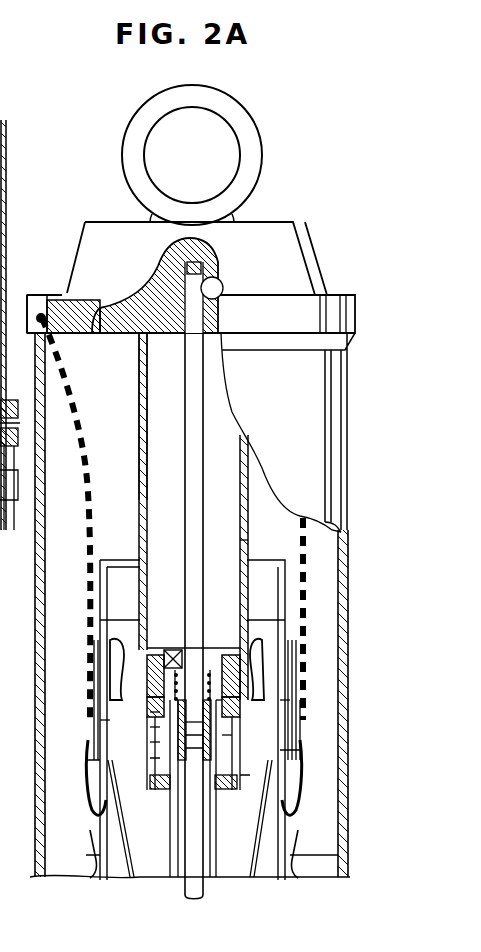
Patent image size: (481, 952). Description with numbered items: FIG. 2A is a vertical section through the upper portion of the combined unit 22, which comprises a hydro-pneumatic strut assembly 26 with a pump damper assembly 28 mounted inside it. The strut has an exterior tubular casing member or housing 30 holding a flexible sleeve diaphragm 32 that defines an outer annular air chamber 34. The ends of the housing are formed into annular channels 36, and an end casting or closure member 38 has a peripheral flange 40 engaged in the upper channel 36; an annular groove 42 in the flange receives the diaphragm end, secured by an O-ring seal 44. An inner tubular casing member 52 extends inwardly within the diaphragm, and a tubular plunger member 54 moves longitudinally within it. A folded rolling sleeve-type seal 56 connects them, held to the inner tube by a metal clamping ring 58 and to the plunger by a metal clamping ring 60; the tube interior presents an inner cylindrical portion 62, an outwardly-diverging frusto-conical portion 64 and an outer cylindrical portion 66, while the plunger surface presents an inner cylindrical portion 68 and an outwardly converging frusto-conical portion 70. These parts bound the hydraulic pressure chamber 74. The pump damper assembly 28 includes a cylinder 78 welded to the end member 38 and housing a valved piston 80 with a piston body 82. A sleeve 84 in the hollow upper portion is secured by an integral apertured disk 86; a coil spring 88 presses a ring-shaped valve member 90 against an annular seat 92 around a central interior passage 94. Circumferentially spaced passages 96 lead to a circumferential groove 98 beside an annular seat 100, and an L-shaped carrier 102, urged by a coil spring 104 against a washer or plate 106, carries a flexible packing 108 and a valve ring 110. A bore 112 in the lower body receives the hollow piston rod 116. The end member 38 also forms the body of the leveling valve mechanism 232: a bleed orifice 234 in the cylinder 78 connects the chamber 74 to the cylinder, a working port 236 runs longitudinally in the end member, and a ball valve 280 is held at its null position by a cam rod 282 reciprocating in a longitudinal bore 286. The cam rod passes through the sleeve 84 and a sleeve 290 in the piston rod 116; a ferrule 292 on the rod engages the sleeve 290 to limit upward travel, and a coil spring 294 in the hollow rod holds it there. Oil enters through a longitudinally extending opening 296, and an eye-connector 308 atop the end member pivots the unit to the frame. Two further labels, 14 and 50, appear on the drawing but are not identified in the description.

The valve plate 14 is at (194, 741).
The combined unit 22 is at (10, 135).
The hydro-pneumatic strut assembly 26 is at (350, 292).
The pump damper assembly 28 is at (252, 545).
The exterior tubular casing member 30 is at (7, 196).
The sleeve diaphragm 32 is at (92, 518).
The outer annular air chamber 34 is at (45, 662).
The annular channel 36 is at (342, 316).
The end casting or closure member 38 is at (131, 262).
The peripheral flange 40 is at (60, 298).
The annular groove 42 is at (82, 325).
The O-ring seal 44 is at (50, 328).
The mounting bracket 50 is at (10, 478).
The inner tubular casing member 52 is at (92, 878).
The tubular plunger member 54 is at (264, 870).
The folded rolling sleeve-type seal 56 is at (86, 760).
The metal clamping ring 58 is at (137, 565).
The metal clamping ring 60 is at (110, 645).
The inner cylindrical portion 62 is at (96, 690).
The intermediate outwardly-diverging frusto-conical portion 64 is at (86, 800).
The outer cylindrical portion 66 is at (86, 855).
The inner cylindrical portion 68 is at (150, 758).
The intermediate outwardly converging frusto-conical portion 70 is at (196, 818).
The hydraulic pressure chamber 74 is at (116, 467).
The cylinder 78 is at (178, 490).
The valved piston 80 is at (228, 644).
The piston body 82 is at (236, 740).
The sleeve 84 is at (150, 712).
The integral apertured disk 86 is at (162, 652).
The coil spring 88 is at (182, 658).
The ring-shaped valve member 90 is at (194, 730).
The annular seat 92 is at (192, 685).
The central interior passage 94 is at (194, 728).
The circumferentially spaced passages 96 is at (244, 655).
The circumferential groove 98 is at (306, 700).
The annular seat 100 is at (150, 727).
The carrier 102 is at (300, 718).
The coil spring 104 is at (152, 790).
The washer or plate 106 is at (236, 792).
The flexible packing 108 is at (108, 720).
The valve ring 110 is at (239, 712).
The bore 112 is at (150, 742).
The hollow piston rod 116 is at (176, 870).
The leveling valve mechanism 232 is at (165, 280).
The bleed orifice 234 is at (138, 372).
The working port 236 is at (224, 326).
The ball valve 280 is at (202, 272).
The cam rod 282 is at (194, 402).
The longitudinal bore 286 is at (214, 292).
The sleeve 290 is at (148, 785).
The ferrule 292 is at (250, 760).
The coil spring 294 is at (198, 860).
The longitudinally extending opening 296 is at (143, 344).
The eye-connector 308 is at (243, 120).